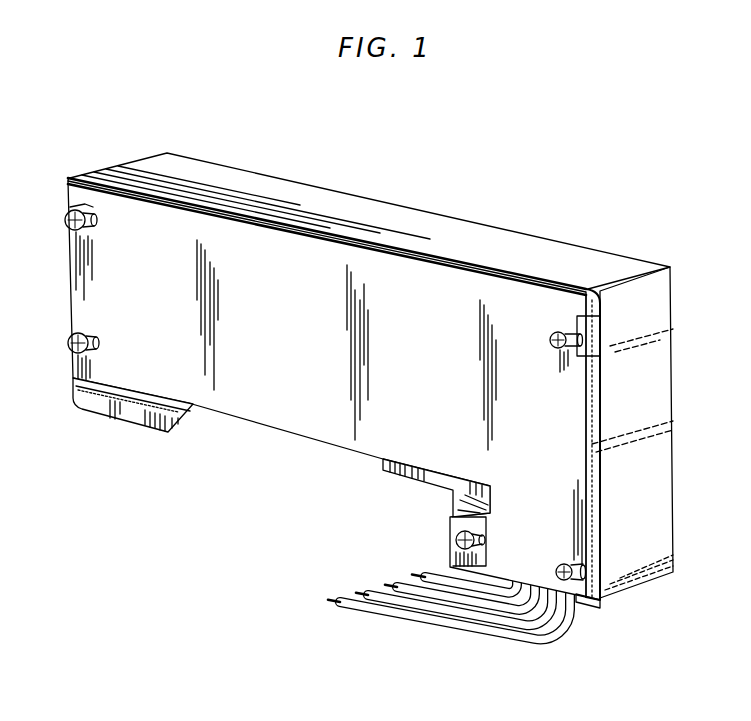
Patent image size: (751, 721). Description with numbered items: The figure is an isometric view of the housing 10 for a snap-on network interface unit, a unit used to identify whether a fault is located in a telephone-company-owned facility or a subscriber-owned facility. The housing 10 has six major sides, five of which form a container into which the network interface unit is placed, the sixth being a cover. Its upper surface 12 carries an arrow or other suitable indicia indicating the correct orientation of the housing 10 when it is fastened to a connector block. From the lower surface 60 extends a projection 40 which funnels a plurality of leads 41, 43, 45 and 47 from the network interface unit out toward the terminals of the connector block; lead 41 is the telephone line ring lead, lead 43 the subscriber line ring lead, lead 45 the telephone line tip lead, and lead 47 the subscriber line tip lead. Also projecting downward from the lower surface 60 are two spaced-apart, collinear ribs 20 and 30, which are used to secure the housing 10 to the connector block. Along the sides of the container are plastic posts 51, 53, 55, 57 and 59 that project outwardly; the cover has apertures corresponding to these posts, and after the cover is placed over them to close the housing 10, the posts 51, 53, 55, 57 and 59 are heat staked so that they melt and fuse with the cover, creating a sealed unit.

The housing 10 is at (667, 420).
The upper surface 12 is at (290, 188).
The rib 20 is at (122, 408).
The rib 30 is at (382, 462).
The projection 40 is at (459, 591).
The lead 41 is at (347, 604).
The lead 43 is at (372, 590).
The lead 45 is at (400, 583).
The lead 47 is at (437, 573).
The post 51 is at (92, 341).
The post 53 is at (477, 538).
The post 55 is at (572, 556).
The post 57 is at (550, 340).
The post 59 is at (88, 222).
The lower surface 60 is at (233, 417).